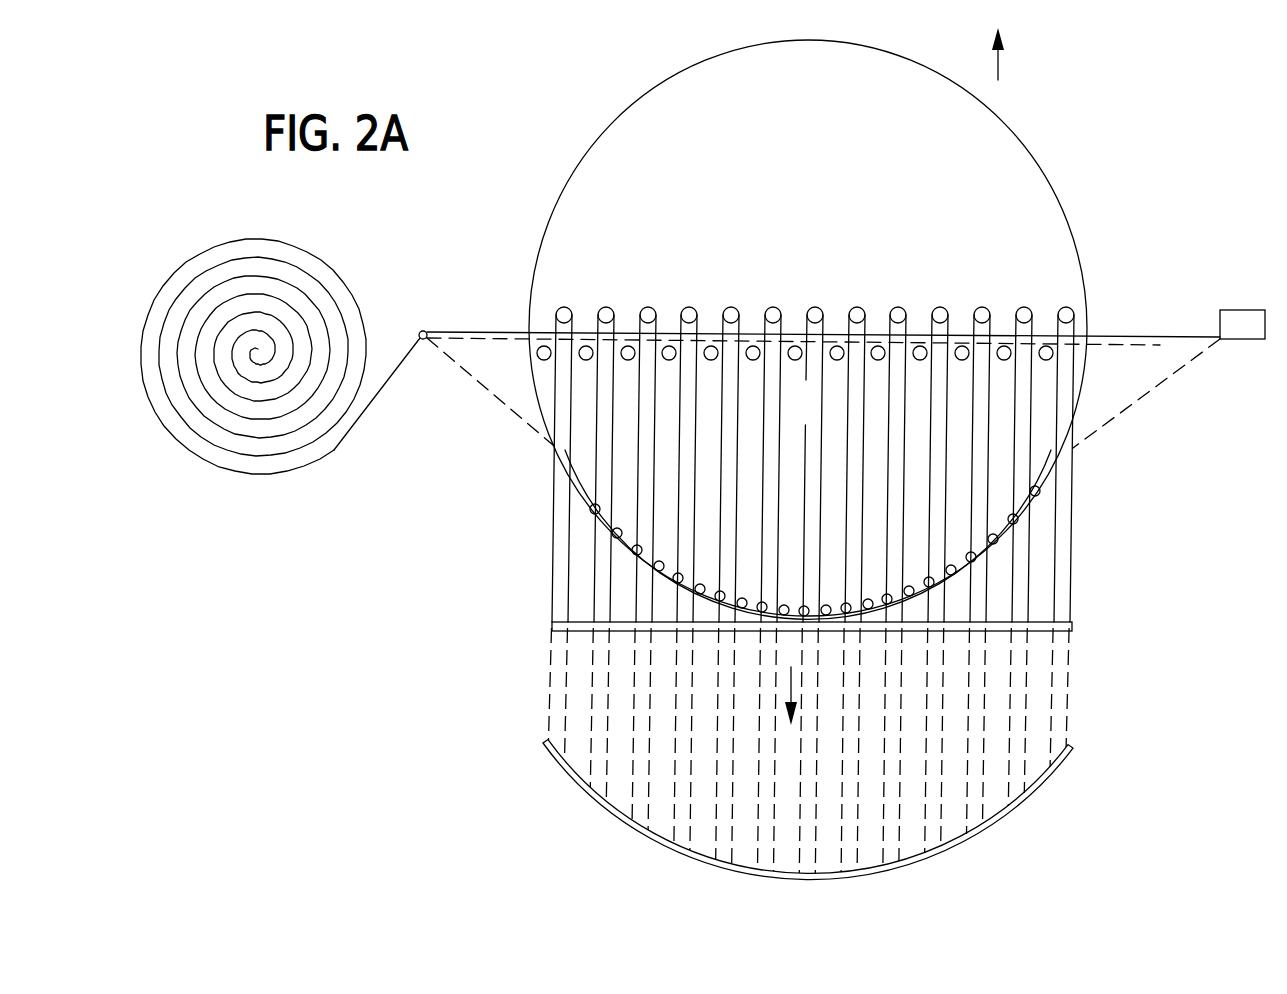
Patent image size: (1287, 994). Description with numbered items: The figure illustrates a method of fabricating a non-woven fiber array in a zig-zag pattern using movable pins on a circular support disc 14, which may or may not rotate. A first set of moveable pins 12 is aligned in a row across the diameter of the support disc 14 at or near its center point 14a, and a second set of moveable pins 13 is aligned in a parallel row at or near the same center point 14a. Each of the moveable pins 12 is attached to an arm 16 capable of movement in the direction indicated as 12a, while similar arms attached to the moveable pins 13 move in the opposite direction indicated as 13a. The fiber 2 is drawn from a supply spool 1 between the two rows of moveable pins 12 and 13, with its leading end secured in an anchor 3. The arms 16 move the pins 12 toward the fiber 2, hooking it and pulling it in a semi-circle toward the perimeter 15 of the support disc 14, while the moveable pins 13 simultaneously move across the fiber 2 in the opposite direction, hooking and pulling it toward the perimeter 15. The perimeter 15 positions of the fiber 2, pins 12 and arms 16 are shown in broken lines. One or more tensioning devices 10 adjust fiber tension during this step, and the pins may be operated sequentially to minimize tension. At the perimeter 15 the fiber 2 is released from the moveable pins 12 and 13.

The supply spool 1 is at (245, 470).
The fiber 2 is at (493, 333).
The anchor 3 is at (1245, 310).
The tensioning device 10 is at (423, 340).
The first set of moveable pins 12 is at (1023, 308).
The direction of movement of arms 12a is at (823, 694).
The second set of moveable pins 13 is at (1047, 360).
The opposite direction of movement 13a is at (1036, 54).
The support disc 14 is at (815, 417).
The center point 14a is at (1147, 345).
The perimeter 15 is at (1050, 182).
The arm 16 is at (1078, 550).